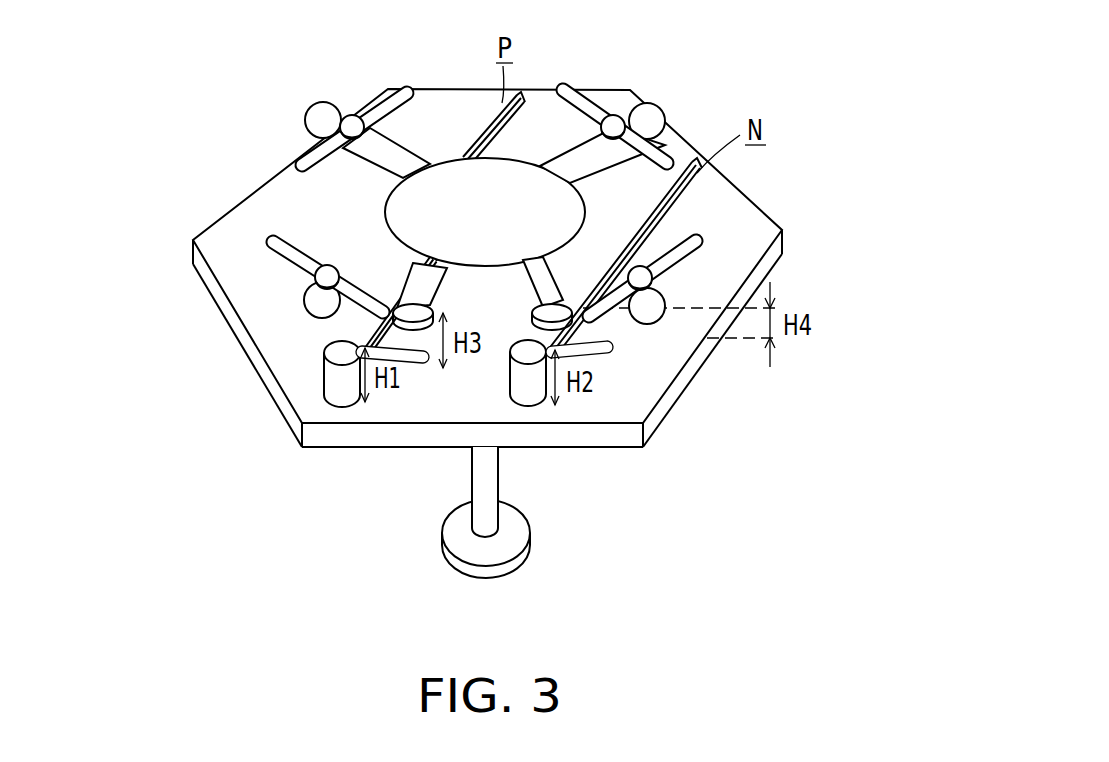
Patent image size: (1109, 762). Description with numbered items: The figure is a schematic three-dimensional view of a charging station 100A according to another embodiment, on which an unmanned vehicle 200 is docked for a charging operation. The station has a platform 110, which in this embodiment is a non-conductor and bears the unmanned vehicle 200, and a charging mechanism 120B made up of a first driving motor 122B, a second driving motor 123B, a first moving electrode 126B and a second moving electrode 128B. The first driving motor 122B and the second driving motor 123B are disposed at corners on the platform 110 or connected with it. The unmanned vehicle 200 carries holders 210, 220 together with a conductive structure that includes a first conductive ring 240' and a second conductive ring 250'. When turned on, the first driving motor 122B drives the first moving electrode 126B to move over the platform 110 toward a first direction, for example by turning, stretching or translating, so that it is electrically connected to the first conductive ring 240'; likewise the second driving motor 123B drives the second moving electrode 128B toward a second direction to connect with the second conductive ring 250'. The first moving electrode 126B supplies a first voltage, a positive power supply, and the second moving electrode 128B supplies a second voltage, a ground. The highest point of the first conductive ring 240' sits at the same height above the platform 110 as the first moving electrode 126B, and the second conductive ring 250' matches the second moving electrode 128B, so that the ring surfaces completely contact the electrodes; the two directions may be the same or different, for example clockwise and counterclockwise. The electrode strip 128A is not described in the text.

The charging station 100A is at (532, 300).
The platform 110 is at (457, 107).
The charging mechanism 120B is at (186, 478).
The first driving motor 122B is at (340, 392).
The second driving motor 123B is at (532, 395).
The first moving electrode 126B is at (357, 327).
The first conductive strip 128A is at (677, 198).
The second moving electrode 128B is at (612, 340).
The unmanned vehicle 200 is at (489, 273).
The holder 210 is at (427, 277).
The holder 220 is at (540, 295).
The first conductive ring 240' is at (410, 399).
The second conductive ring 250' is at (658, 359).